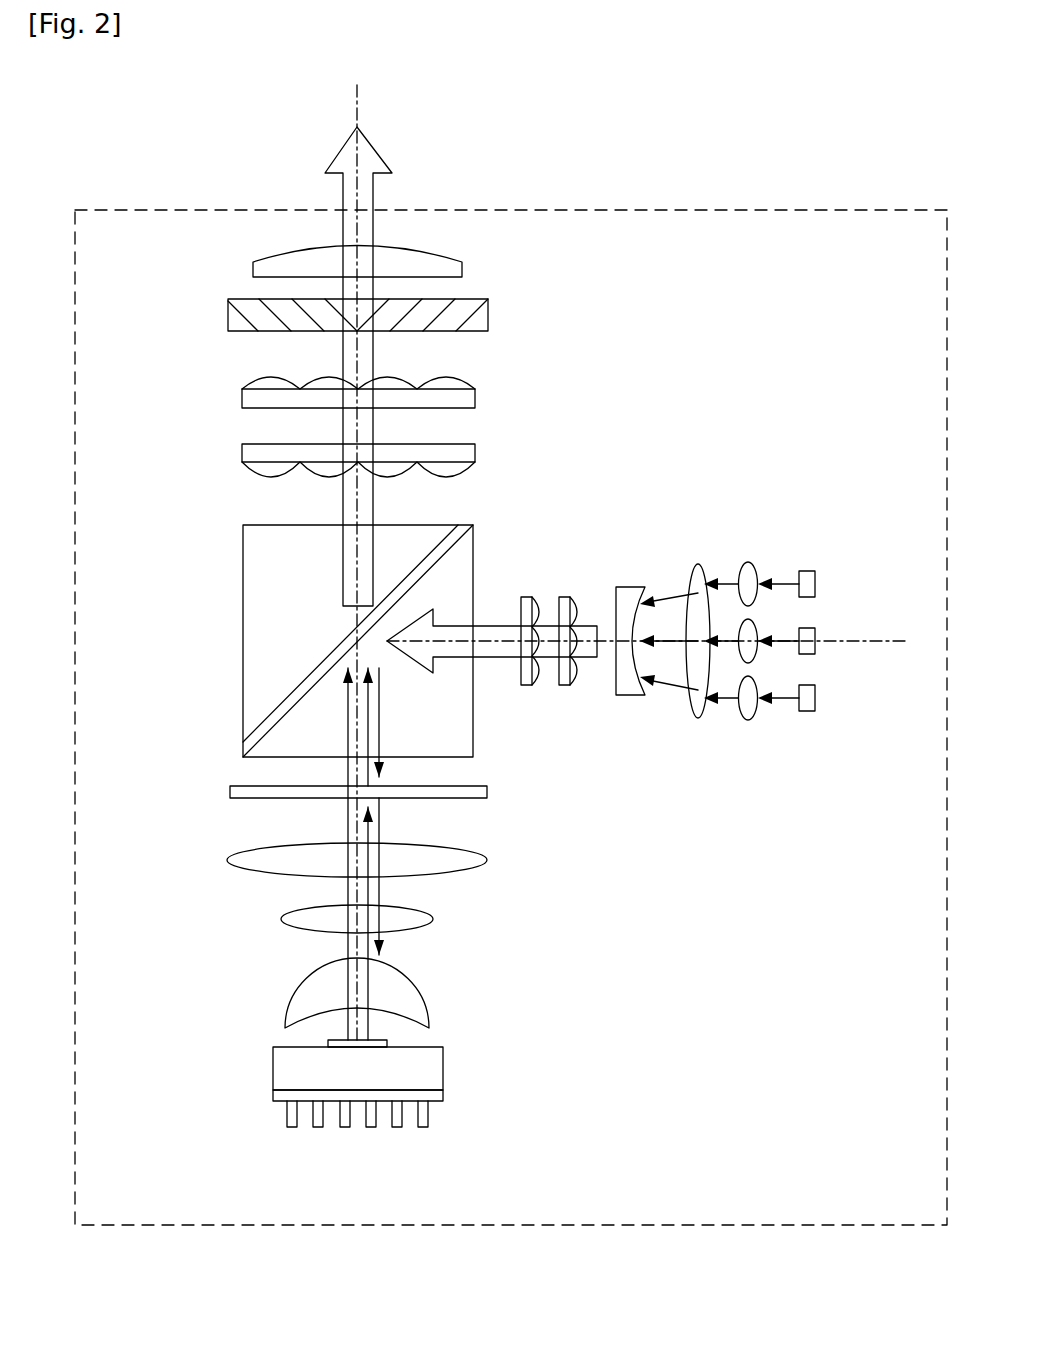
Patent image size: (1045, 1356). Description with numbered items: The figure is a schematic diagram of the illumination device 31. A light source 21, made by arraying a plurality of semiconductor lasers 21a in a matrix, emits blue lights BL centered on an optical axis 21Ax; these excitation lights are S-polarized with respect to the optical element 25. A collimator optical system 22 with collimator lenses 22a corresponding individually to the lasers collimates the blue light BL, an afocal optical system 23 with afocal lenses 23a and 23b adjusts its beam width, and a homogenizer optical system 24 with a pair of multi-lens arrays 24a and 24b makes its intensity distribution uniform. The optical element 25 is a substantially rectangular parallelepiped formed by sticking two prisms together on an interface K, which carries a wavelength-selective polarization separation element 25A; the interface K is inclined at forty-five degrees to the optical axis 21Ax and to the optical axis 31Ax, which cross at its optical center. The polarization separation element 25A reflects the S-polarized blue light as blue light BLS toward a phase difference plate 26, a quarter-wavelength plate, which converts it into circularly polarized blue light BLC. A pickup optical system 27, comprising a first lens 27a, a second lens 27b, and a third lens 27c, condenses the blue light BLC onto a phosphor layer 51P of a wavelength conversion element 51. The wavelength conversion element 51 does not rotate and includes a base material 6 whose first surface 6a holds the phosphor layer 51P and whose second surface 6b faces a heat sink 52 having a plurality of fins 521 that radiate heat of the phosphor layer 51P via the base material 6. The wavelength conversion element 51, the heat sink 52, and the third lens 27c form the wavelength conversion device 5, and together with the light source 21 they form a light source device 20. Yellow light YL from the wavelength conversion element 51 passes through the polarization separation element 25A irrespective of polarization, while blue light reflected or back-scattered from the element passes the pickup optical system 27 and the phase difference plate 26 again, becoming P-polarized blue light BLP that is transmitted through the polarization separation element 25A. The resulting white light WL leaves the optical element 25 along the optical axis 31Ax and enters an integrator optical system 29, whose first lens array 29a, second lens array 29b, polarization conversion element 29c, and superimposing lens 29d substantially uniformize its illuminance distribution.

The illumination device 31 is at (880, 135).
The optical axis 31Ax is at (358, 100).
The white light WL is at (343, 185).
The integrator optical system 29 is at (436, 359).
The first lens array 29a is at (412, 456).
The second lens array 29b is at (475, 398).
The polarization conversion element 29c is at (488, 310).
The superimposing lens 29d is at (462, 258).
The optical element 25 is at (295, 641).
The polarization separation element 25A is at (335, 655).
The interface K is at (313, 683).
The yellow light YL is at (348, 718).
The blue light BL is at (500, 658).
The blue light (P-polarized) BLP is at (345, 745).
The blue light (S-polarized) BLS is at (378, 745).
The blue light (circularly polarized) BLC is at (380, 836).
The phase difference plate 26 is at (488, 792).
The pickup optical system 27 is at (440, 935).
The first lens 27a is at (487, 856).
The second lens 27b is at (433, 913).
The third lens 27c is at (437, 993).
The wavelength conversion device 5 is at (379, 1104).
The light source device 20 is at (511, 827).
The wavelength conversion element 51 is at (404, 1097).
The phosphor layer 51P is at (405, 1038).
The base material 6 is at (358, 1109).
The first surface 6a is at (300, 1045).
The second surface 6b is at (335, 1092).
The heat sink 52 is at (400, 1139).
The fins 521 is at (398, 1127).
The light source 21 is at (810, 639).
The semiconductor lasers 21a is at (810, 711).
The optical axis 21Ax is at (893, 641).
The collimator optical system 22 is at (753, 644).
The collimator lenses 22a is at (752, 720).
The afocal optical system 23 is at (668, 583).
The afocal lens 23a is at (700, 562).
The afocal lens 23b is at (641, 595).
The homogenizer optical system 24 is at (545, 583).
The multi-lens array 24a is at (576, 597).
The multi-lens array 24b is at (515, 597).